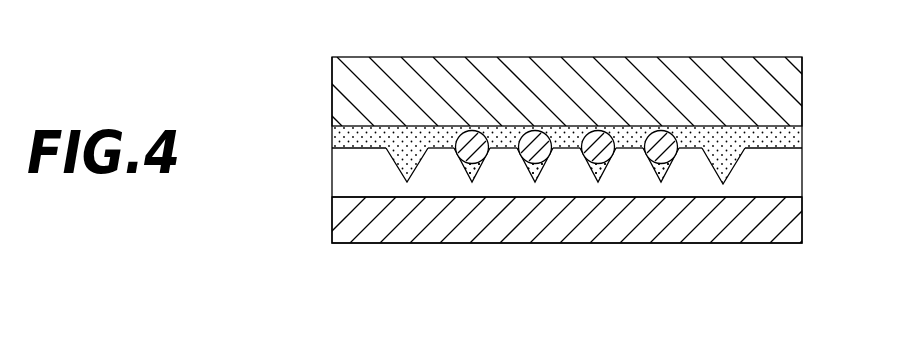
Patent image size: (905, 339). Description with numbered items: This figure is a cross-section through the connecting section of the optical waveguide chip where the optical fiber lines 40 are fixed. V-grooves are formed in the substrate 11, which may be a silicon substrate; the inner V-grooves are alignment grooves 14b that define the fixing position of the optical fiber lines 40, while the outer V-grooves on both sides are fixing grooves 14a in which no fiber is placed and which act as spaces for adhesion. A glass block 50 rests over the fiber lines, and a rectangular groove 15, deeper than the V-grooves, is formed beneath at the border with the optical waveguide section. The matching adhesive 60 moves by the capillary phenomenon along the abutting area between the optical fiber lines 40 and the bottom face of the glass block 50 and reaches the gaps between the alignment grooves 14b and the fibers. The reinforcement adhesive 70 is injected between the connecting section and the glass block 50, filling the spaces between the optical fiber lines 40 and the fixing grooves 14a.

The substrate 11 is at (765, 243).
The fixing grooves 14a is at (412, 165).
The alignment grooves 14b is at (650, 172).
The rectangular groove 15 is at (775, 197).
The optical fiber lines 40 is at (656, 134).
The glass block 50 is at (770, 75).
The matching adhesive 60 is at (651, 143).
The reinforcement adhesive 70 is at (787, 138).